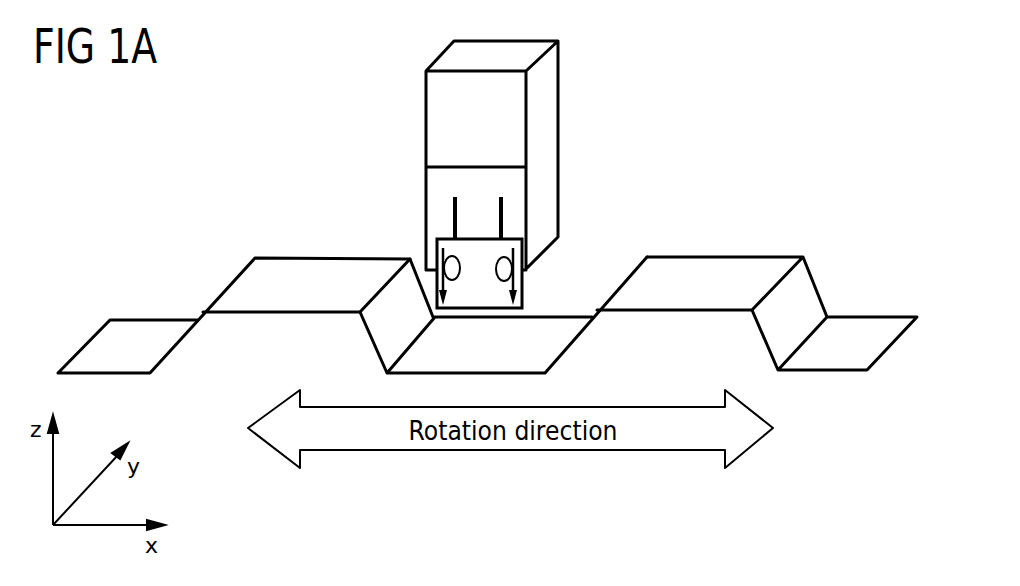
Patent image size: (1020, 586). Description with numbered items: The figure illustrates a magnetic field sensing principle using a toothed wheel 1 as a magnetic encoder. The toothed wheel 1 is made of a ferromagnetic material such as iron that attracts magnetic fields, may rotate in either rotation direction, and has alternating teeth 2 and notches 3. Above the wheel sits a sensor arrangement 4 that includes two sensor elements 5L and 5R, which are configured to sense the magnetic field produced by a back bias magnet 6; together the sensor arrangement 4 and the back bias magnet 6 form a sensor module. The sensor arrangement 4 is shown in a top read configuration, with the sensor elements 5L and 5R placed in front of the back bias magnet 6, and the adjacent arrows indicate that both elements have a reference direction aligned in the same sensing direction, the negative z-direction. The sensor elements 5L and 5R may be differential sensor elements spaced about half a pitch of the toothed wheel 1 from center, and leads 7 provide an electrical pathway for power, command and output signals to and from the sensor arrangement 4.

The toothed wheel 1 is at (248, 400).
The teeth 2 is at (718, 268).
The notches 3 is at (613, 253).
The sensor arrangement 4 is at (523, 293).
The sensor element 5L is at (445, 261).
The sensor element 5R is at (522, 268).
The back bias magnet 6 is at (558, 116).
The leads 7 is at (503, 210).